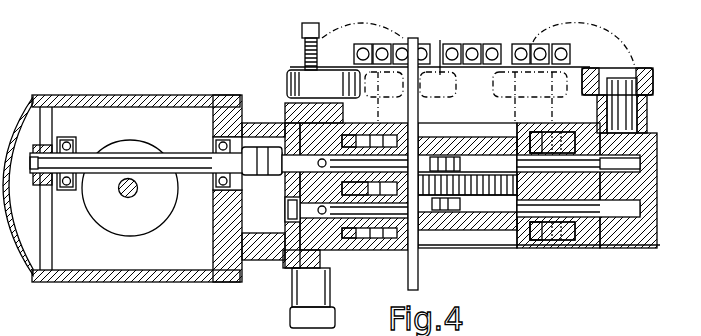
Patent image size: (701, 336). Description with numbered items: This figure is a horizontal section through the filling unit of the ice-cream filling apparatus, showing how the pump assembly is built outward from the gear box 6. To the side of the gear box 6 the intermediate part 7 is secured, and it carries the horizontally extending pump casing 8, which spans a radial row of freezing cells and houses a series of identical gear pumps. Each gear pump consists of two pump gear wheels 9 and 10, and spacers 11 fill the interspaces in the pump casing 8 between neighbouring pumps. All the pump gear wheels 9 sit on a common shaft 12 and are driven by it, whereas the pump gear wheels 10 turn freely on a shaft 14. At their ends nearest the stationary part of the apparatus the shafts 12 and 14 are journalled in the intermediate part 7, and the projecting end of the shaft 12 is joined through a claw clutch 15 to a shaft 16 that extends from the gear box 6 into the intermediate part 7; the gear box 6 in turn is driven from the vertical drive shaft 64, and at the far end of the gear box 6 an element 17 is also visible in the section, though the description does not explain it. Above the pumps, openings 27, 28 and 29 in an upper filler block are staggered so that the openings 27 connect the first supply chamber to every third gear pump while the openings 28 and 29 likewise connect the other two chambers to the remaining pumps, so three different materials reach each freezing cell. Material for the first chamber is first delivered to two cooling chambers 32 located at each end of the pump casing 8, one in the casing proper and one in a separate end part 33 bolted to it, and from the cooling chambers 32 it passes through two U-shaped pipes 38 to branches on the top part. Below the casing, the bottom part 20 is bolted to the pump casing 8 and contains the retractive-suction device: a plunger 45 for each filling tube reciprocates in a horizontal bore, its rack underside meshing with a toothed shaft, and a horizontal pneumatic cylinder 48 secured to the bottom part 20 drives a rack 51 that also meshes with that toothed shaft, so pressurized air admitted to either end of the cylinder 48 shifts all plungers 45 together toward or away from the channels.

The gear box 6 is at (153, 96).
The intermediate part 7 is at (258, 123).
The pump casing 8 is at (358, 246).
The pump gear wheel 9 is at (362, 137).
The pump gear wheel 10 is at (395, 236).
The spacer 11 is at (561, 133).
The shaft 12 is at (615, 169).
The shaft 14 is at (590, 210).
The claw clutch 15 is at (262, 177).
The shaft 16 is at (203, 153).
The end plate 17 is at (43, 186).
The bottom part 20 is at (440, 58).
The opening 27 is at (452, 157).
The opening 28 is at (476, 180).
The opening 29 is at (437, 210).
The cooling chamber 32 is at (300, 190).
The end part 33 is at (641, 241).
The U-shaped pipe 38 is at (626, 42).
The plunger 45 is at (522, 48).
The pneumatic cylinder 48 is at (330, 290).
The rack 51 is at (303, 33).
The drive shaft 64 is at (136, 191).